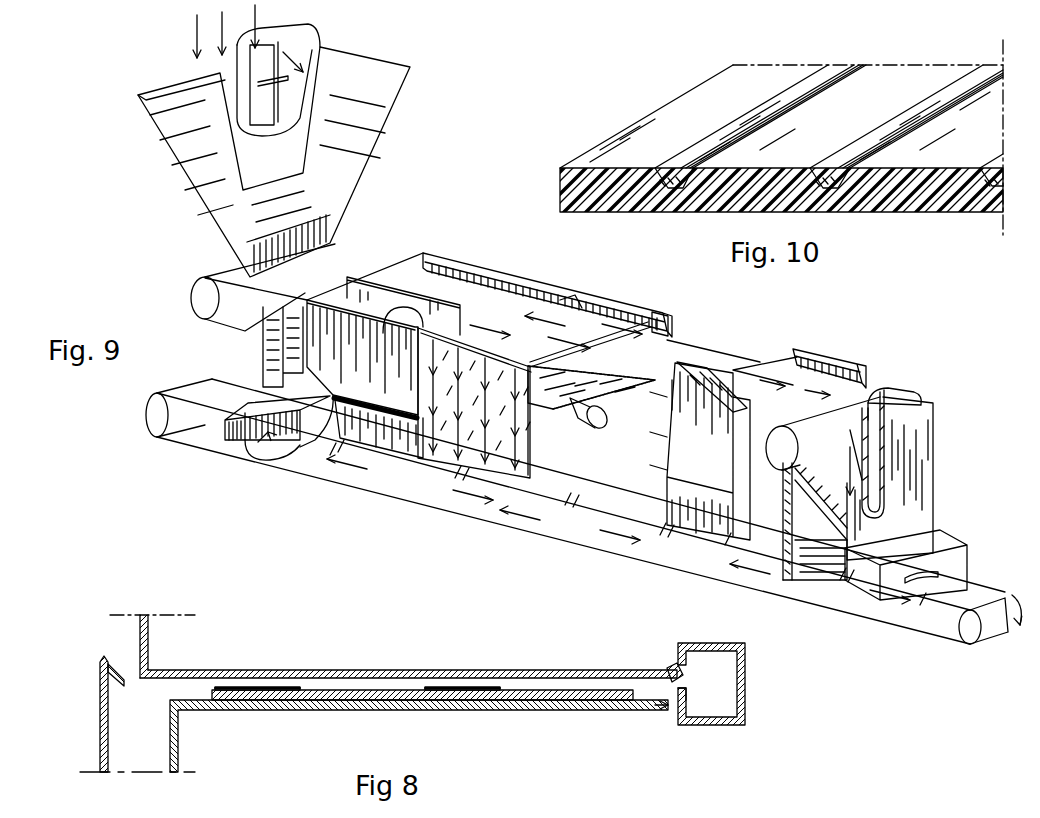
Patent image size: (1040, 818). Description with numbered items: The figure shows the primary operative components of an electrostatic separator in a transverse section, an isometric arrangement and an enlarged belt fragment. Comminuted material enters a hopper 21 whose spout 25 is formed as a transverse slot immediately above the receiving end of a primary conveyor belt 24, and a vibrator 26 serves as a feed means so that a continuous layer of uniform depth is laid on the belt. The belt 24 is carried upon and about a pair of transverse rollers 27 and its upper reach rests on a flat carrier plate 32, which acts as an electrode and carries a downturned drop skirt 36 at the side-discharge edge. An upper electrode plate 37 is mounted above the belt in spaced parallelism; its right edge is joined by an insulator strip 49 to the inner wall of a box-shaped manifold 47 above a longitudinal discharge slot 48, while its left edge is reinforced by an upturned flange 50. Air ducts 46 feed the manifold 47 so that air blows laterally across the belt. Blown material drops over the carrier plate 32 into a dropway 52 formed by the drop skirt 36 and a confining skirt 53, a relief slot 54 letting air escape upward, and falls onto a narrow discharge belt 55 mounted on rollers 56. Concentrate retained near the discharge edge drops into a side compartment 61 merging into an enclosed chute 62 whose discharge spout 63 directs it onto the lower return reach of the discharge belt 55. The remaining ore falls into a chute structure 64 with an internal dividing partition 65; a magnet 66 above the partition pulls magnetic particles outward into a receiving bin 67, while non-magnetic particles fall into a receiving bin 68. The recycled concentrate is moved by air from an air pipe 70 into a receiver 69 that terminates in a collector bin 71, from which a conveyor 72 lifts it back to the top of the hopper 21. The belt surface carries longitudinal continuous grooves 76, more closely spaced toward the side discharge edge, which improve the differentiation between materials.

In FIG. 9, the hopper 21 is at (274, 162).
In FIG. 9, the primary conveyor belt 24 is at (353, 263).
In FIG. 10, the primary conveyor belt 24 is at (625, 132).
In FIG. 8, the primary conveyor belt 24 is at (395, 690).
In FIG. 9, the spout 25 is at (323, 240).
In FIG. 9, the vibrator 26 is at (228, 223).
In FIG. 9, the transverse rollers 27 is at (195, 296).
In FIG. 9, the carrier plate 32 is at (593, 347).
In FIG. 8, the carrier plate 32 is at (555, 712).
In FIG. 9, the drop skirt 36 is at (528, 442).
In FIG. 8, the drop skirt 36 is at (178, 742).
In FIG. 9, the upper electrode plate 37 is at (624, 344).
In FIG. 8, the upper electrode plate 37 is at (428, 672).
In FIG. 9, the air duct 46 is at (580, 427).
In FIG. 9, the manifold 47 is at (533, 293).
In FIG. 8, the manifold 47 is at (745, 662).
In FIG. 9, the discharge slot 48 is at (633, 318).
In FIG. 8, the discharge slot 48 is at (683, 682).
In FIG. 9, the insulator strip 49 is at (563, 305).
In FIG. 8, the insulator strip 49 is at (680, 668).
In FIG. 9, the upturned flange 50 is at (408, 295).
In FIG. 8, the upturned flange 50 is at (150, 641).
In FIG. 9, the dropway 52 is at (420, 402).
In FIG. 8, the dropway 52 is at (131, 764).
In FIG. 9, the confining skirt 53 is at (359, 373).
In FIG. 8, the confining skirt 53 is at (100, 722).
In FIG. 9, the relief slot 54 is at (403, 326).
In FIG. 8, the relief slot 54 is at (132, 672).
In FIG. 9, the discharge belt 55 is at (590, 498).
In FIG. 9, the rollers 56 is at (150, 424).
In FIG. 9, the side compartment 61 is at (793, 487).
In FIG. 9, the enclosed chute 62 is at (795, 522).
In FIG. 9, the discharge spout 63 is at (797, 573).
In FIG. 9, the chute structure 64 is at (917, 450).
In FIG. 9, the dividing partition 65 is at (872, 460).
In FIG. 9, the magnet 66 is at (907, 387).
In FIG. 9, the receiving bin 67 is at (938, 543).
In FIG. 9, the receiving bin 68 is at (864, 483).
In FIG. 9, the receiver 69 is at (258, 440).
In FIG. 9, the air pipe 70 is at (280, 460).
In FIG. 9, the collector bin 71 is at (277, 418).
In FIG. 9, the conveyor 72 is at (287, 42).
In FIG. 10, the longitudinal continuous grooves 76 is at (690, 157).
In FIG. 8, the longitudinal continuous grooves 76 is at (243, 660).